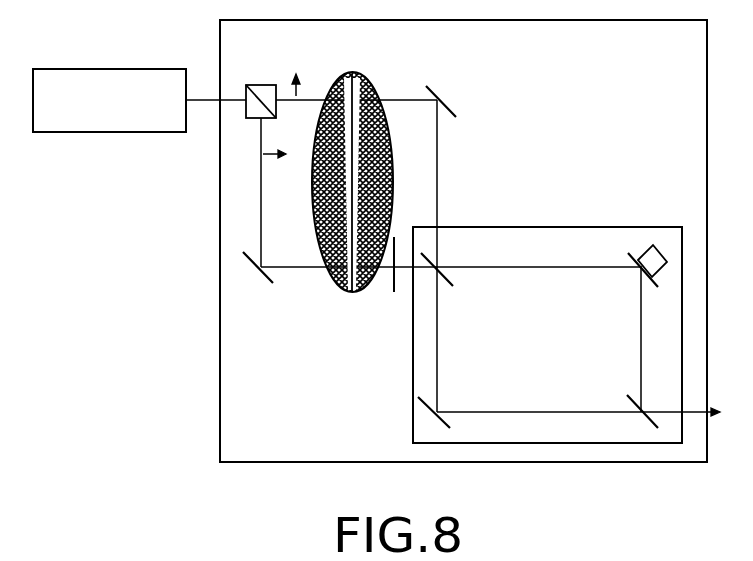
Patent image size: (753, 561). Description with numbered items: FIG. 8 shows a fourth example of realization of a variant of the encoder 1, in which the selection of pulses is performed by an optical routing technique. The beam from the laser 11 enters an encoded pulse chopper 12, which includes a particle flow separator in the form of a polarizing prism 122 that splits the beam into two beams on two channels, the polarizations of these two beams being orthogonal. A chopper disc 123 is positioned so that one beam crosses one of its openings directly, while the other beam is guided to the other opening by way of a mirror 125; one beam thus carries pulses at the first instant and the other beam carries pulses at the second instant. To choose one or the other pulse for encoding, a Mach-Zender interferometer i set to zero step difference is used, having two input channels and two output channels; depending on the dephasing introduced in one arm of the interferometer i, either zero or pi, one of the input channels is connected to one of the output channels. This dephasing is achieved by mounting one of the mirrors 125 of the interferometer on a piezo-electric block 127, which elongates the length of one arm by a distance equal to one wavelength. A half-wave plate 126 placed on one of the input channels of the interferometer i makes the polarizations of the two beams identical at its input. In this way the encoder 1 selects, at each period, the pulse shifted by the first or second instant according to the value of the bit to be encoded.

The encoder 1 is at (172, 232).
The laser 11 is at (122, 111).
The encoded pulse chopper 12 is at (498, 60).
The polarizing prism 122 is at (262, 82).
The disc 123 is at (395, 169).
The mirror 125 is at (637, 382).
The half-wave plate 126 is at (382, 282).
The piezo-electric block 127 is at (648, 246).
The Mach-Zender interferometer i is at (550, 258).